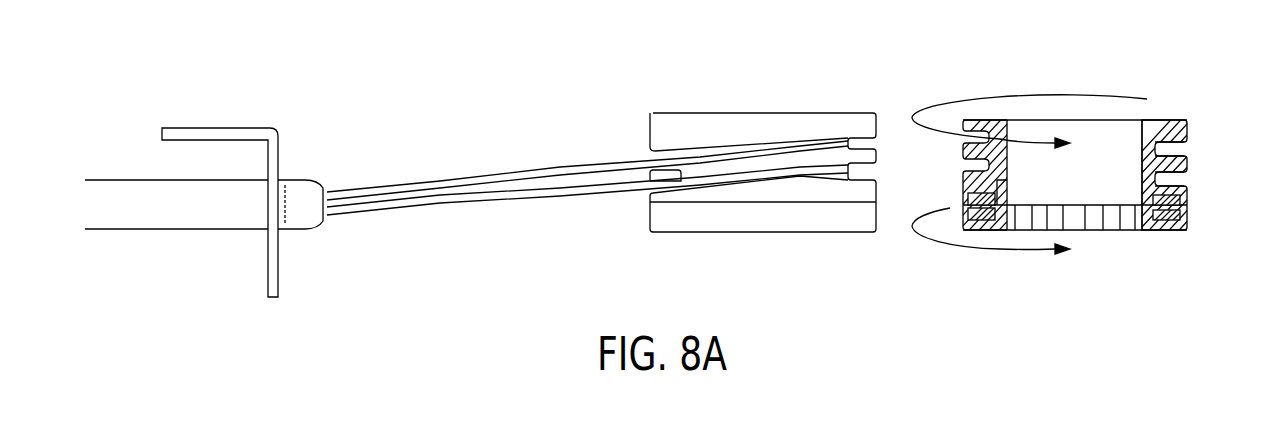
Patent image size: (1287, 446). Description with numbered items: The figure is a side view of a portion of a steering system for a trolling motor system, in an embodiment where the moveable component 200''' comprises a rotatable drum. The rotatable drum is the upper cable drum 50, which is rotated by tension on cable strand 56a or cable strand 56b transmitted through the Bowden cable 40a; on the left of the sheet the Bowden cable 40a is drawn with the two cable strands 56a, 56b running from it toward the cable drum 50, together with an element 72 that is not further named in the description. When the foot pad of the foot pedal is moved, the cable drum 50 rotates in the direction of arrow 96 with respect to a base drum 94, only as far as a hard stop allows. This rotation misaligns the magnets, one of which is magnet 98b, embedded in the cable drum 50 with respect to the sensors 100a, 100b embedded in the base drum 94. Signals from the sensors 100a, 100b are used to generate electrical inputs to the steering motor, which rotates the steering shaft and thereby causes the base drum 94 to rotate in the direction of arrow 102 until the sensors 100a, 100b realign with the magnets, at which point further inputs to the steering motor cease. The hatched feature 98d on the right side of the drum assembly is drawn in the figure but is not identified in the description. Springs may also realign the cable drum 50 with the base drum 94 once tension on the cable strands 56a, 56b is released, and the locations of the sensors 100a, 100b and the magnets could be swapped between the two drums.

The Bowden cable 40a is at (190, 217).
The retaining bracket 72 is at (210, 130).
The cable strand 56a is at (463, 205).
The cable strand 56b is at (463, 178).
The upper cable drum 50 is at (670, 127).
The moveable component 200''' is at (966, 171).
The base drum 94 is at (1167, 231).
The arrow 96 is at (1025, 93).
The magnet 98b is at (963, 183).
The thread 98d is at (1183, 198).
The sensor 100a is at (1183, 211).
The sensor 100b is at (975, 212).
The arrow 102 is at (996, 250).